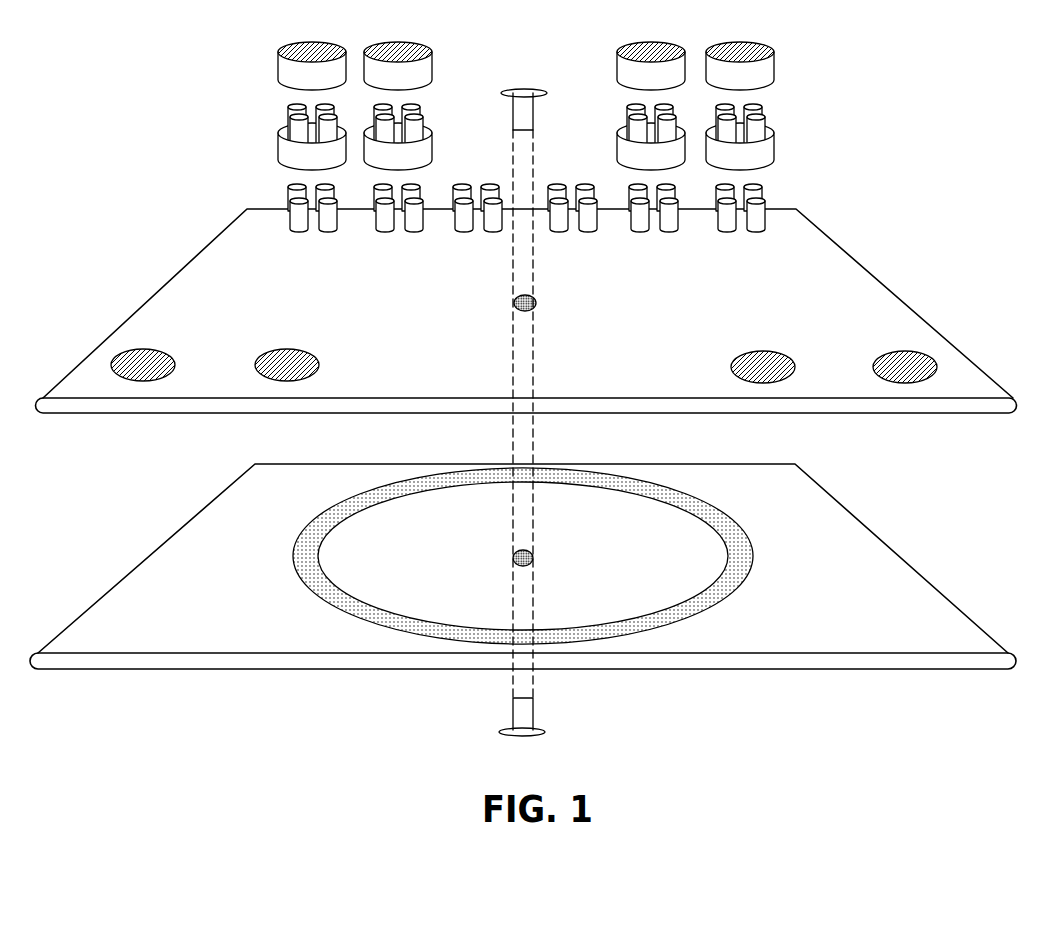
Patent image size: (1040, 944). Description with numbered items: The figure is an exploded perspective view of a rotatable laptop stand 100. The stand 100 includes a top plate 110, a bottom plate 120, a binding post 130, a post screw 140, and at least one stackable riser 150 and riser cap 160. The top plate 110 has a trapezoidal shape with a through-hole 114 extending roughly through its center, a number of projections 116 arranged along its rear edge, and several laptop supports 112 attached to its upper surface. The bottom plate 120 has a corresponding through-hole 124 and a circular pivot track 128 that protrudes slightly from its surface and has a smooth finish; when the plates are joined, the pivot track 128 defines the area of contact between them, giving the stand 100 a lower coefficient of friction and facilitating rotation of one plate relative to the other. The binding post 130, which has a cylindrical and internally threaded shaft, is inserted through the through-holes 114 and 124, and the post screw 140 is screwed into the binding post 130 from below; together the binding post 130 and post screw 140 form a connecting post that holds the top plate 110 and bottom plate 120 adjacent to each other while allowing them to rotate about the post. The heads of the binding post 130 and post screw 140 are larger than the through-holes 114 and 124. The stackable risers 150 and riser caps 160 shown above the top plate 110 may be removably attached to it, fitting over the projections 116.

The rotatable laptop stand 100 is at (160, 207).
The top plate 110 is at (852, 277).
The laptop supports 112 is at (300, 370).
The through-hole 114 is at (536, 303).
The projections 116 is at (380, 214).
The bottom plate 120 is at (823, 638).
The through-hole 124 is at (530, 557).
The pivot track 128 is at (717, 592).
The binding post 130 is at (526, 113).
The post screw 140 is at (518, 723).
The stackable riser 150 is at (762, 152).
The riser cap 160 is at (763, 72).